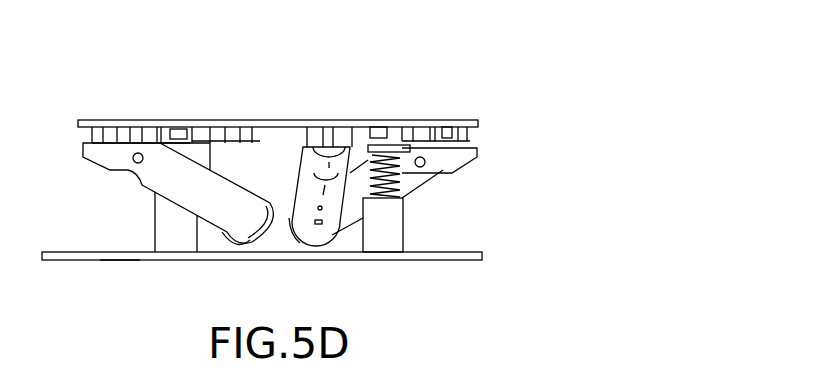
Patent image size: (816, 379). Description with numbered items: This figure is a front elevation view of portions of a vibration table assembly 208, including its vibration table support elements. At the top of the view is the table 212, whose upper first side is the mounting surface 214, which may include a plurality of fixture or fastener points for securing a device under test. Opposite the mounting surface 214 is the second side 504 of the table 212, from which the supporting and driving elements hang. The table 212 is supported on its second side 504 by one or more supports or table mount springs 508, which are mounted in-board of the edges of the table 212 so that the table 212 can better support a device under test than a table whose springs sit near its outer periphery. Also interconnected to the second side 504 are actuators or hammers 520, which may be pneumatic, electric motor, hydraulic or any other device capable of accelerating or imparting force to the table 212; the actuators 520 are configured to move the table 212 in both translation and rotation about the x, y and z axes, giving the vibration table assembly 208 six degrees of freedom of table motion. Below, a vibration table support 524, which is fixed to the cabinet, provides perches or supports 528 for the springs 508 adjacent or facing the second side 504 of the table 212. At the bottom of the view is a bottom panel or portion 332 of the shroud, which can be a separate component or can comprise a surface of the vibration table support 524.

The vibration table assembly 208 is at (286, 178).
The table 212 is at (95, 119).
The mounting surface 214 is at (205, 119).
The bottom panel 332 is at (70, 260).
The second side 504 is at (437, 148).
The table mount spring 508 is at (402, 182).
The actuator 520 is at (142, 183).
The vibration table support 524 is at (118, 260).
The perch 528 is at (182, 240).